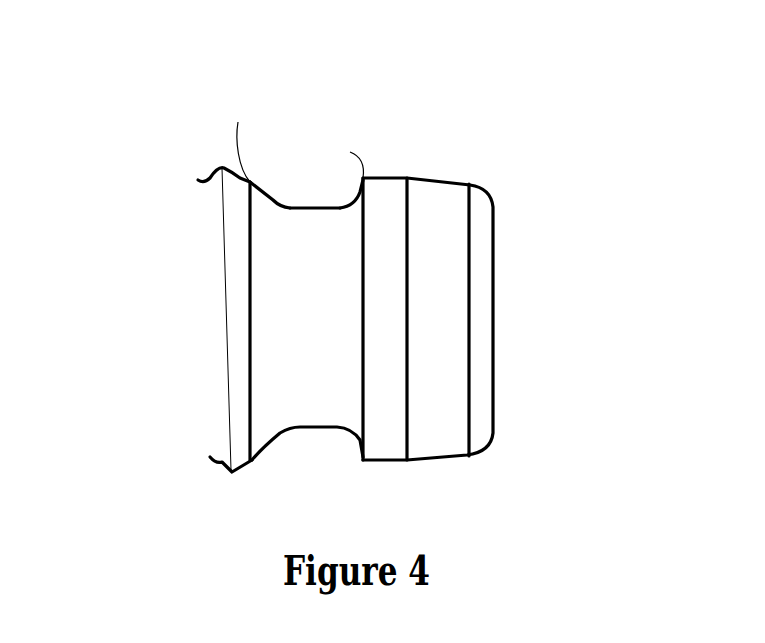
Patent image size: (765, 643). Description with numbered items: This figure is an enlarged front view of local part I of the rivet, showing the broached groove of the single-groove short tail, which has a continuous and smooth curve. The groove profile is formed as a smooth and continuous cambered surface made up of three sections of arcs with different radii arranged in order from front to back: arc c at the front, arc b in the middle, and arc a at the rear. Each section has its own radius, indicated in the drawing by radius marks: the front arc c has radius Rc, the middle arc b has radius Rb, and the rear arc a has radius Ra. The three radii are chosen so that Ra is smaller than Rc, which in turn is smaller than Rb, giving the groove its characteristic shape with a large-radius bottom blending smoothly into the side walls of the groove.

The arc a is at (358, 195).
The arc b is at (318, 208).
The arc c is at (275, 199).
The radius of arc a Ra is at (330, 178).
The radius of arc b Rb is at (318, 332).
The radius of arc c Rc is at (308, 138).
The local part I is at (622, 115).